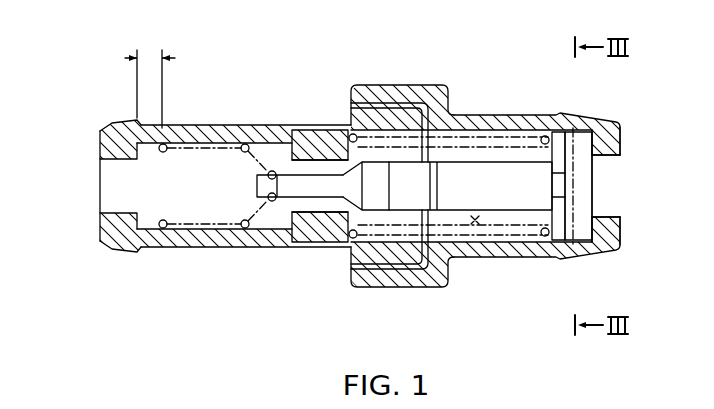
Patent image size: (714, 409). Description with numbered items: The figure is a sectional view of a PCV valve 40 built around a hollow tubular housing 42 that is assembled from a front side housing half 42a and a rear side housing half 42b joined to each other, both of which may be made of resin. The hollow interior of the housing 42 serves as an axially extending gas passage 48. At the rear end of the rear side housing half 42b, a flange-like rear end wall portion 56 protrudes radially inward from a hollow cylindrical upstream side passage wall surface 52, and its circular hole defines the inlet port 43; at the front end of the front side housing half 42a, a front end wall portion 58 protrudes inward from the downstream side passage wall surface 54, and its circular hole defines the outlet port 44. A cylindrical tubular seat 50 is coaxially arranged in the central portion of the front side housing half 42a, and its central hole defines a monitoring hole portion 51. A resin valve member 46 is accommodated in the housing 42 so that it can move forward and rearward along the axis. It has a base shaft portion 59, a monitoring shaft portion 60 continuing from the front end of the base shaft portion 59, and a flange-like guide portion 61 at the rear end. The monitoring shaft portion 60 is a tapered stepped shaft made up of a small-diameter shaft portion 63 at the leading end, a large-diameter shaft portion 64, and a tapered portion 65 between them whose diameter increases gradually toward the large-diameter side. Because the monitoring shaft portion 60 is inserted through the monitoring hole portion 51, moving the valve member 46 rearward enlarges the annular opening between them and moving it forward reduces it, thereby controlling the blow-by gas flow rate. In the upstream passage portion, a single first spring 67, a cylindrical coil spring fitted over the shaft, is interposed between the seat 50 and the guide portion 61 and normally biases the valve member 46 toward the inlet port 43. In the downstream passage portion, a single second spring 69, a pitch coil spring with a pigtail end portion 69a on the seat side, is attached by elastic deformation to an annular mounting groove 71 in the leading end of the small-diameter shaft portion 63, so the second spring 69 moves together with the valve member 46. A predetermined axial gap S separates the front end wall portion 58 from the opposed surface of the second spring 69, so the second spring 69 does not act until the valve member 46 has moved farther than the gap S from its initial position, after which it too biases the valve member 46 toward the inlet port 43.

The PCV valve 40 is at (450, 78).
The housing 42 is at (384, 83).
The front side housing half 42a is at (220, 121).
The rear side housing half 42b is at (539, 122).
The inlet port 43 is at (611, 192).
The outlet port 44 is at (100, 190).
The valve member 46 is at (489, 160).
The gas passage 48 is at (475, 225).
The seat 50 is at (323, 137).
The monitoring hole portion 51 is at (288, 163).
The upstream side passage wall surface 52 is at (591, 134).
The downstream side passage wall surface 54 is at (200, 231).
The rear end wall portion 56 is at (609, 150).
The front end wall portion 58 is at (100, 138).
The base shaft portion 59 is at (512, 204).
The monitoring shaft portion 60 is at (375, 211).
The guide portion 61 is at (560, 240).
The small-diameter shaft portion 63 is at (313, 186).
The large-diameter shaft portion 64 is at (408, 167).
The tapered portion 65 is at (357, 134).
The first spring 67 is at (352, 238).
The second spring 69 is at (162, 229).
The pigtail end portion 69a is at (266, 206).
The mounting groove 71 is at (272, 201).
The gap S is at (150, 78).